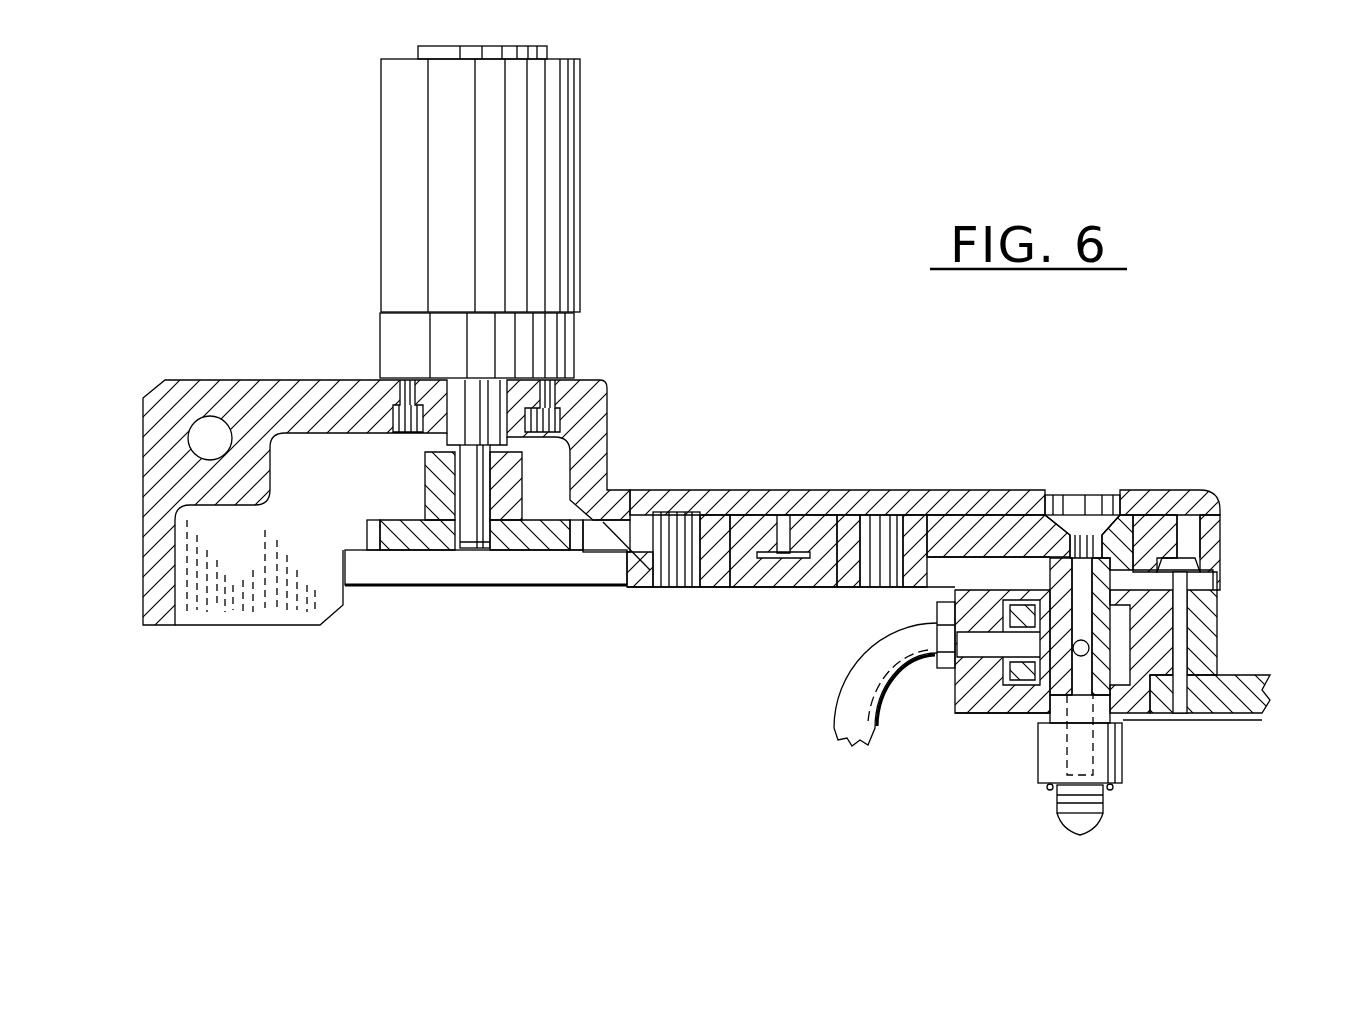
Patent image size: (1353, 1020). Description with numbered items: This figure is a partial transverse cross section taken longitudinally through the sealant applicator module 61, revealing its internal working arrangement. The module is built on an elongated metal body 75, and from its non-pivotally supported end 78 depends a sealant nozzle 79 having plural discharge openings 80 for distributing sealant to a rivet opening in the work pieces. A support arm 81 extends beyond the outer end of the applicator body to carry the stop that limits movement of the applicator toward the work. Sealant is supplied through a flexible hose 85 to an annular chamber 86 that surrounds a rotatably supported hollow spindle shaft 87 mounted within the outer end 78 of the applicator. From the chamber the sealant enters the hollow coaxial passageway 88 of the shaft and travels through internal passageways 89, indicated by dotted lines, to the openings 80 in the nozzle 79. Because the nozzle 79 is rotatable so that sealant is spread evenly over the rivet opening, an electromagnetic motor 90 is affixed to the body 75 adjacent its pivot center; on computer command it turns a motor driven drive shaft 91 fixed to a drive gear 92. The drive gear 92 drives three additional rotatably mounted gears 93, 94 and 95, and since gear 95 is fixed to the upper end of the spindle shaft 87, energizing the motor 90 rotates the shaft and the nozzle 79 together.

The sealant applicator module 61 is at (687, 345).
The elongated metal body 75 is at (1007, 497).
The non-pivotally supported end 78 is at (1222, 546).
The sealant nozzle 79 is at (1103, 788).
The discharge openings 80 is at (1105, 793).
The support arm 81 is at (1228, 673).
The flexible hose 85 is at (863, 662).
The annular chamber 86 is at (1053, 693).
The hollow spindle shaft 87 is at (1033, 713).
The hollow coaxial passageway 88 is at (1125, 715).
The internal passageways 89 is at (1117, 767).
The electromagnetic motor 90 is at (528, 182).
The drive shaft 91 is at (467, 530).
The drive gear 92 is at (543, 543).
The gear 93 is at (720, 530).
The gear 94 is at (862, 520).
The gear 95 is at (1130, 540).